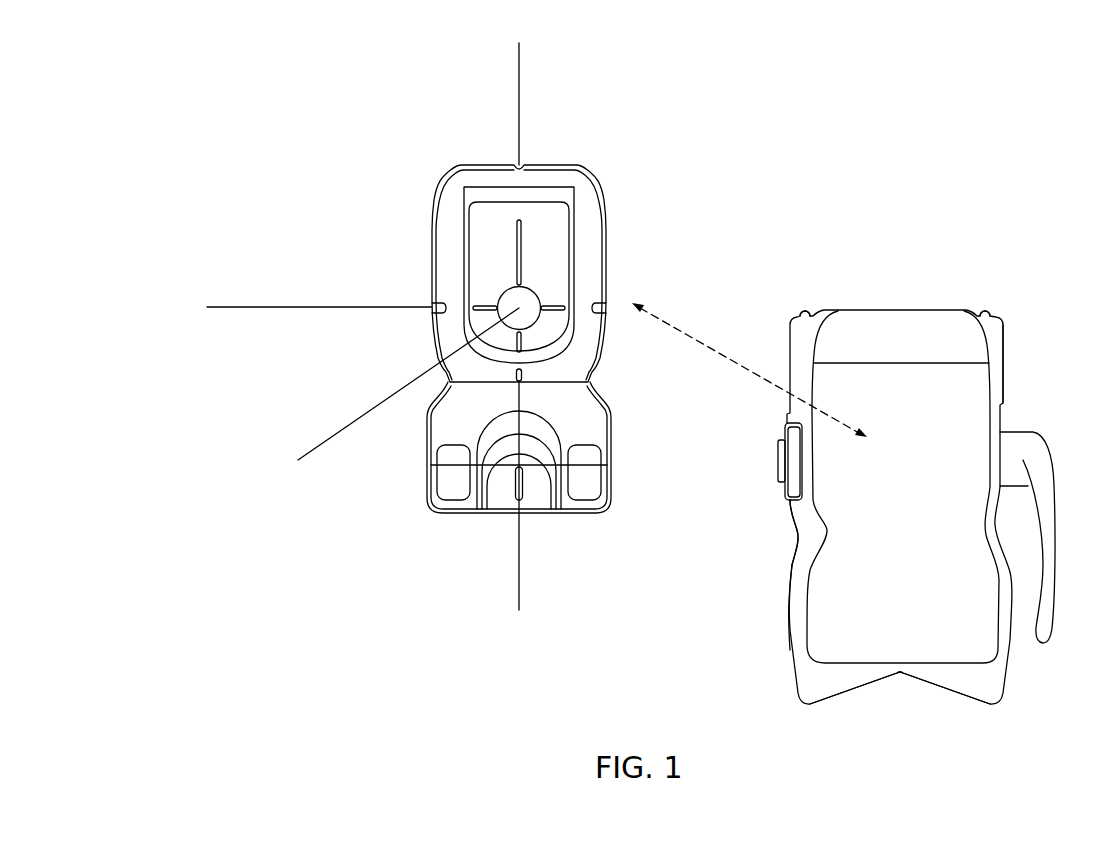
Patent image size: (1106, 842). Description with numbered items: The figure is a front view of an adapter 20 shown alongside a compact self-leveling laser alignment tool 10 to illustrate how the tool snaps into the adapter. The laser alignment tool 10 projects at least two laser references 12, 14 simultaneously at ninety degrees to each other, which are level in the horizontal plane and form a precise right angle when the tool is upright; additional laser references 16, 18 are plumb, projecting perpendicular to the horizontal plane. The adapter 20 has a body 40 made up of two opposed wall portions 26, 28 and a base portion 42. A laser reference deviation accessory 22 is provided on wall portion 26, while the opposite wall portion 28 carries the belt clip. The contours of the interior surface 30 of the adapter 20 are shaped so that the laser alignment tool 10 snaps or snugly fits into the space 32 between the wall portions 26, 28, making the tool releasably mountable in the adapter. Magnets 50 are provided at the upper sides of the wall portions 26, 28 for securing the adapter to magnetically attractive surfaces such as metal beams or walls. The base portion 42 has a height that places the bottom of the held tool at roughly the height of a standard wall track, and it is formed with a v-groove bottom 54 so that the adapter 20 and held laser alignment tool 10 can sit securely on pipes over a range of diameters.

The laser alignment tool 10 is at (636, 156).
The laser reference 12 is at (233, 306).
The laser reference 14 is at (345, 425).
The laser reference 16 is at (519, 93).
The laser reference 18 is at (519, 580).
The adapter 20 is at (778, 318).
The laser reference deviation accessory 22 is at (766, 462).
The wall portion 26 is at (790, 620).
The wall portion 28 is at (1005, 355).
The interior surface 30 is at (815, 460).
The space 32 is at (830, 357).
The body 40 is at (797, 543).
The base portion 42 is at (1013, 680).
The magnet 50 is at (806, 311).
The v-groove bottom 54 is at (857, 688).